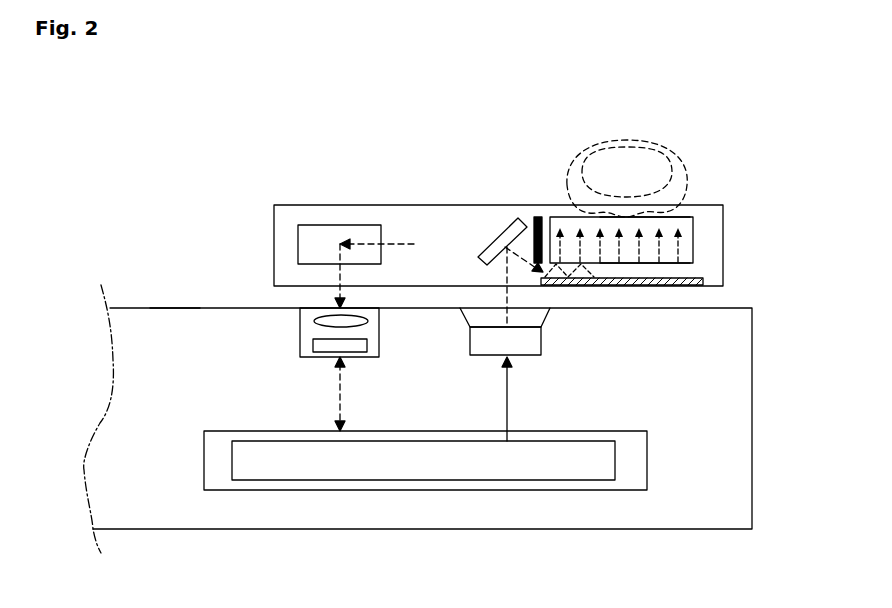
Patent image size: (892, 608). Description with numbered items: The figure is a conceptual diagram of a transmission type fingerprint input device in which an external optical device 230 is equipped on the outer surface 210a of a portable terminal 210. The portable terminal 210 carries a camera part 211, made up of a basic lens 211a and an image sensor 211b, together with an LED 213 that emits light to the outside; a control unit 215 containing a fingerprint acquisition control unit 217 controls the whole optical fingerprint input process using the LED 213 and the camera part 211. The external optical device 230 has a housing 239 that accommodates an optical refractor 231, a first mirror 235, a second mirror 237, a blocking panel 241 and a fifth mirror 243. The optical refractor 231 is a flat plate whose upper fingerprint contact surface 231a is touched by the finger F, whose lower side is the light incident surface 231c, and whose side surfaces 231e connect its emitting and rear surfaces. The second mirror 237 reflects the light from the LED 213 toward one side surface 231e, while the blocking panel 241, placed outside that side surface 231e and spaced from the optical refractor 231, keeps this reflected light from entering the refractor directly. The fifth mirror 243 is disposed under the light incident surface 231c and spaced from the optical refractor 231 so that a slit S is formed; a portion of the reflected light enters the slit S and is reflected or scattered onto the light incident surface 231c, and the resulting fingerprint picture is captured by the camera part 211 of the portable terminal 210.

The portable terminal 210 is at (758, 417).
The outer surface 210a is at (168, 307).
The camera part 211 is at (332, 335).
The lens 211a is at (312, 321).
The image sensor 211b is at (312, 346).
The LED 213 is at (543, 336).
The control unit 215 is at (425, 502).
The fingerprint acquisition control unit 217 is at (417, 481).
The external optical device 230 is at (512, 218).
The optical refractor 231 is at (679, 183).
The fingerprint contact surface 231a is at (690, 216).
The light incident surface 231c is at (689, 264).
The side surface 231e is at (570, 232).
The first mirror 235 is at (297, 241).
The second mirror 237 is at (494, 257).
The housing 239 is at (724, 249).
The blocking panel 241 is at (537, 215).
The fifth mirror 243 is at (704, 286).
The finger F is at (669, 149).
The slit S is at (663, 270).